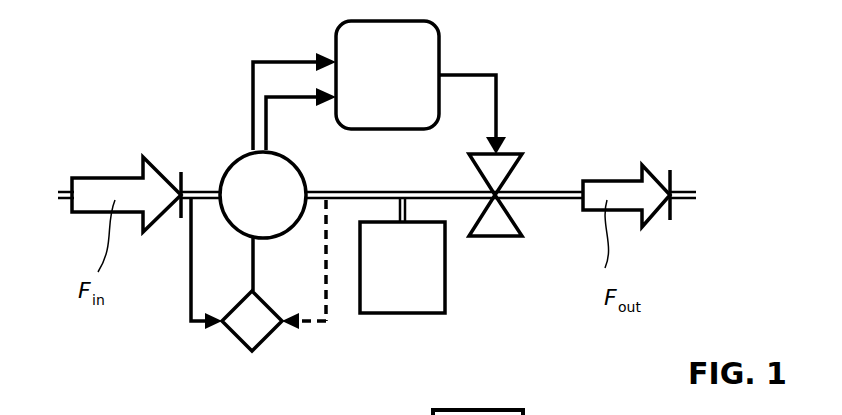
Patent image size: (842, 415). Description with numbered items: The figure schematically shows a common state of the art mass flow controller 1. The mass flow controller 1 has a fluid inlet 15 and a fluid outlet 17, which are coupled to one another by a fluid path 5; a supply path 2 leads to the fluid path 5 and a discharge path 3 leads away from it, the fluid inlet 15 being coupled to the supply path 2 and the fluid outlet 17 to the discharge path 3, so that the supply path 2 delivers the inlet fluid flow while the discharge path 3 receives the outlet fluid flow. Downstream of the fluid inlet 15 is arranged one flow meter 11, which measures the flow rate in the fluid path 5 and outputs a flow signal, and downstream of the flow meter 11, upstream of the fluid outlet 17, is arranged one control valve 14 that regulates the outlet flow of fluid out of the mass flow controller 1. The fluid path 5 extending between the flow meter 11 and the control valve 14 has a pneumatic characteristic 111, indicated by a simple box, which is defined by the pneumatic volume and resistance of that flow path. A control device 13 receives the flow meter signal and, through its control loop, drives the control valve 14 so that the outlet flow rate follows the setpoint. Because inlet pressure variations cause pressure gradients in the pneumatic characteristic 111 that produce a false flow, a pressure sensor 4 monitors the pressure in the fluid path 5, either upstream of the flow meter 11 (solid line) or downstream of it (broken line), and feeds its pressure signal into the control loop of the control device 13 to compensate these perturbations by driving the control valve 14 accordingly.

The mass flow controller 1 is at (128, 57).
The supply path 2 is at (62, 195).
The discharge path 3 is at (685, 198).
The pressure sensor 4 is at (252, 330).
The fluid path 5 is at (445, 200).
The flow meter 11 is at (263, 195).
The control device 13 is at (379, 87).
The control valve 14 is at (493, 225).
The fluid inlet 15 is at (176, 218).
The fluid outlet 17 is at (672, 172).
The pneumatic characteristic 111 is at (402, 255).